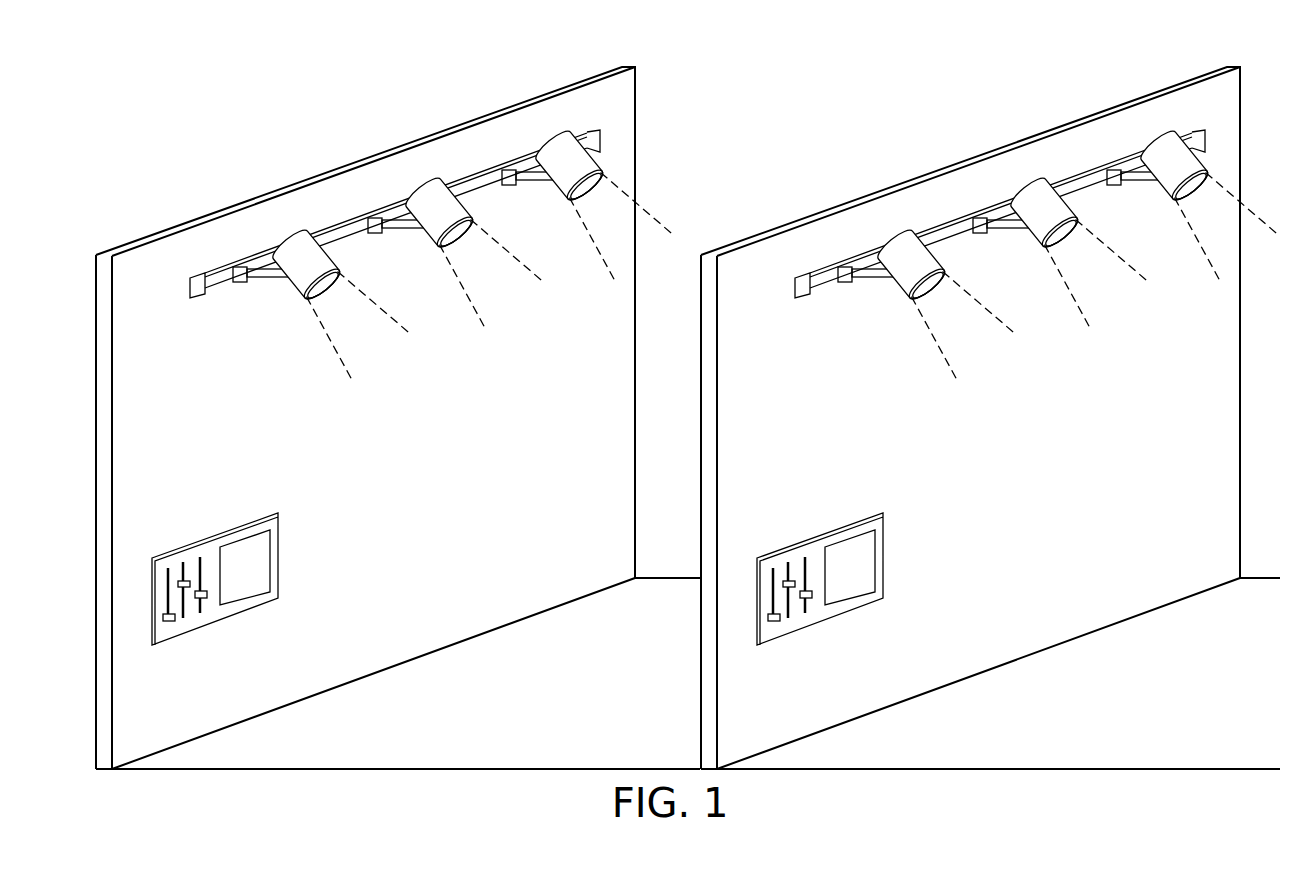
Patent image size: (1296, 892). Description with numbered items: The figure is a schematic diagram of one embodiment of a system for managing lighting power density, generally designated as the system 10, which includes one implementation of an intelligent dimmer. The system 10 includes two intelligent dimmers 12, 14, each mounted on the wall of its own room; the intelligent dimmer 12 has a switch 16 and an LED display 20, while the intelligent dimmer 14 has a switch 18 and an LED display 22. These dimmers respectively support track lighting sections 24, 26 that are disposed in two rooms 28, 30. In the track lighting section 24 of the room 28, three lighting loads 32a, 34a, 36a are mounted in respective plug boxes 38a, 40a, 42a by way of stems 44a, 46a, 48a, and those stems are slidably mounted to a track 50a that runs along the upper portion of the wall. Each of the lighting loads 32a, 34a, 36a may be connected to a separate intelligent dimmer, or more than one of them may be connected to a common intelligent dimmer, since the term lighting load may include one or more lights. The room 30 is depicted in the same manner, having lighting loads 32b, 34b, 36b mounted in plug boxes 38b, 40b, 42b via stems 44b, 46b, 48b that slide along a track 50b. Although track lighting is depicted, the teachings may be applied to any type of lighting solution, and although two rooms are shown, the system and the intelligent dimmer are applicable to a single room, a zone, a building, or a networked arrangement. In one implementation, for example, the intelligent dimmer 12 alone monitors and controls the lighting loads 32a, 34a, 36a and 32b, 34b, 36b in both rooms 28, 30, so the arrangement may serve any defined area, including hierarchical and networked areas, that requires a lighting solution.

The system for managing lighting power density 10 is at (398, 418).
The intelligent dimmer 12 is at (261, 600).
The intelligent dimmer 14 is at (866, 598).
The switch 16 is at (171, 621).
The switch 18 is at (790, 620).
The LED display 20 is at (249, 589).
The LED display 22 is at (853, 592).
The track lighting section 24 is at (335, 222).
The track lighting section 26 is at (1007, 209).
The room 28 is at (466, 730).
The room 30 is at (990, 418).
The lighting load 32a is at (313, 293).
The lighting load 34a is at (458, 242).
The lighting load 36a is at (587, 193).
The plug box 38a is at (298, 302).
The plug box 40a is at (431, 246).
The plug box 42a is at (566, 201).
The stem 44a is at (266, 278).
The stem 46a is at (402, 229).
The stem 48a is at (538, 180).
The track 50a is at (210, 294).
The lighting load 32b is at (929, 276).
The lighting load 34b is at (1064, 225).
The lighting load 36b is at (1193, 177).
The plug box 38b is at (915, 328).
The plug box 40b is at (1049, 275).
The plug box 42b is at (1183, 229).
The stem 44b is at (866, 318).
The stem 46b is at (1001, 266).
The stem 48b is at (1135, 219).
The track 50b is at (812, 333).